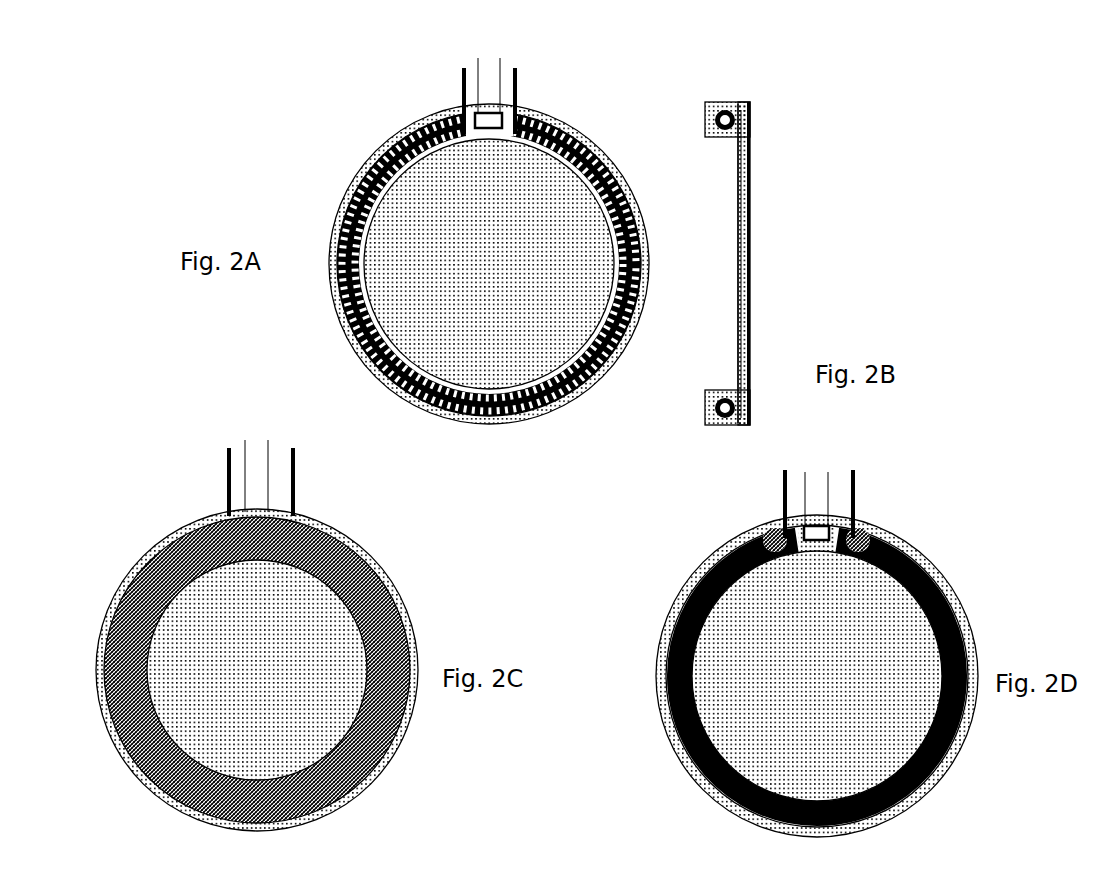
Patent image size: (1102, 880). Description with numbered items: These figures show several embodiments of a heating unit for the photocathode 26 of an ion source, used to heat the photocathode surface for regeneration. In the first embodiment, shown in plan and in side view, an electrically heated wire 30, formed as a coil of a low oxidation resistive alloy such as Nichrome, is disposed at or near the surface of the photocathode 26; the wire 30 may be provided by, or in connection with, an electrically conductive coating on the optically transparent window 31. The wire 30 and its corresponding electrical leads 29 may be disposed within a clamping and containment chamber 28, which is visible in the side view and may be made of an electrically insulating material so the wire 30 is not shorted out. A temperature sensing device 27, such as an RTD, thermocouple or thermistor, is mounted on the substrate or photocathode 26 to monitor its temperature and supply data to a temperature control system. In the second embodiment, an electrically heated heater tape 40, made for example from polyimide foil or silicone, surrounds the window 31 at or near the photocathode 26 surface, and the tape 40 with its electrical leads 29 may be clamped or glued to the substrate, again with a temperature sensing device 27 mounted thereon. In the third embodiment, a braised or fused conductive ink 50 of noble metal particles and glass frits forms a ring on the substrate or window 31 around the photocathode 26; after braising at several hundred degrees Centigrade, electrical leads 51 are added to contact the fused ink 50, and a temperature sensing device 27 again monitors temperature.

In FIG. 2B, the photocathode 26 is at (750, 318).
In FIG. 2A, the temperature sensing device 27 is at (483, 100).
In FIG. 2C, the temperature sensing device 27 is at (257, 508).
In FIG. 2D, the temperature sensing device 27 is at (818, 523).
In FIG. 2B, the clamping and containment chamber 28 is at (710, 100).
In FIG. 2A, the electrical leads 29 is at (518, 82).
In FIG. 2C, the electrical leads 29 is at (226, 450).
In FIG. 2D, the electrical leads 29 is at (850, 473).
In FIG. 2A, the electrically heated wire 30 is at (363, 363).
In FIG. 2B, the electrically heated wire 30 is at (745, 112).
In FIG. 2A, the optically transparent window 31 is at (460, 218).
In FIG. 2B, the optically transparent window 31 is at (743, 233).
In FIG. 2C, the optically transparent window 31 is at (243, 613).
In FIG. 2D, the optically transparent window 31 is at (780, 607).
In FIG. 2C, the heater tape 40 is at (353, 572).
In FIG. 2D, the fused conductive ink 50 is at (927, 568).
In FIG. 2D, the electrical leads 51 is at (855, 537).